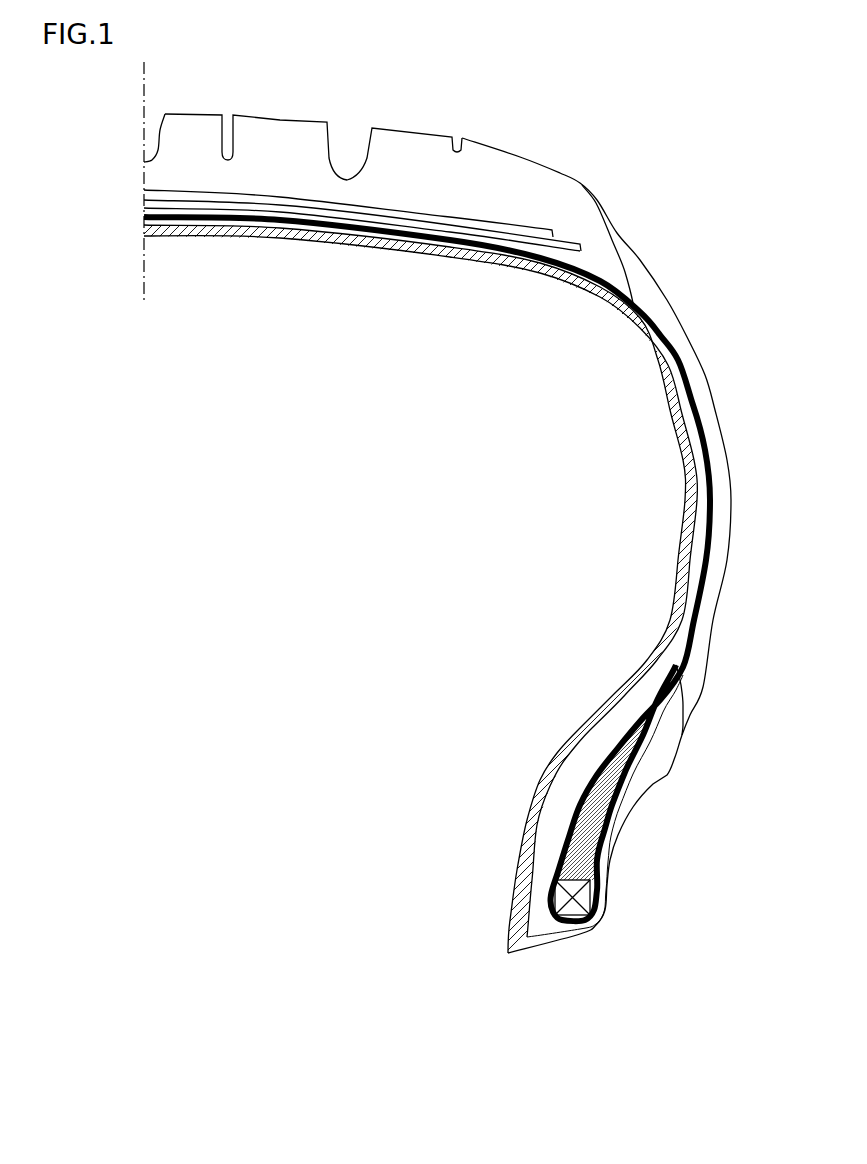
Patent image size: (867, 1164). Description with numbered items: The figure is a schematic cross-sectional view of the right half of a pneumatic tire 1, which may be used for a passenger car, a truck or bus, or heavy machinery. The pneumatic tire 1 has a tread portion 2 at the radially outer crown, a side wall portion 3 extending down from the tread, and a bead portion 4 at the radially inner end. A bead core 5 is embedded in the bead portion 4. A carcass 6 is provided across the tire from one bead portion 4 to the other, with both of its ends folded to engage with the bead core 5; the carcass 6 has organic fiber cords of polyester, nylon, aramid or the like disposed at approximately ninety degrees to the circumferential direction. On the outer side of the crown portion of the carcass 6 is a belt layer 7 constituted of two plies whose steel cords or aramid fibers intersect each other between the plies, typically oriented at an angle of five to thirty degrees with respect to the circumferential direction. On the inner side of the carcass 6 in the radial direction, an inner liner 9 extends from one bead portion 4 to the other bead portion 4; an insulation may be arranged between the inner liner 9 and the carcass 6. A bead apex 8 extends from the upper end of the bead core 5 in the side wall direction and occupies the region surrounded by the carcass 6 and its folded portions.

The pneumatic tire 1 is at (276, 108).
The tread portion 2 is at (432, 126).
The side wall portion 3 is at (738, 457).
The bead portion 4 is at (659, 793).
The bead core 5 is at (568, 912).
The carcass 6 is at (697, 633).
The belt layer 7 is at (139, 183).
The bead apex 8 is at (583, 832).
The inner liner 9 is at (655, 660).